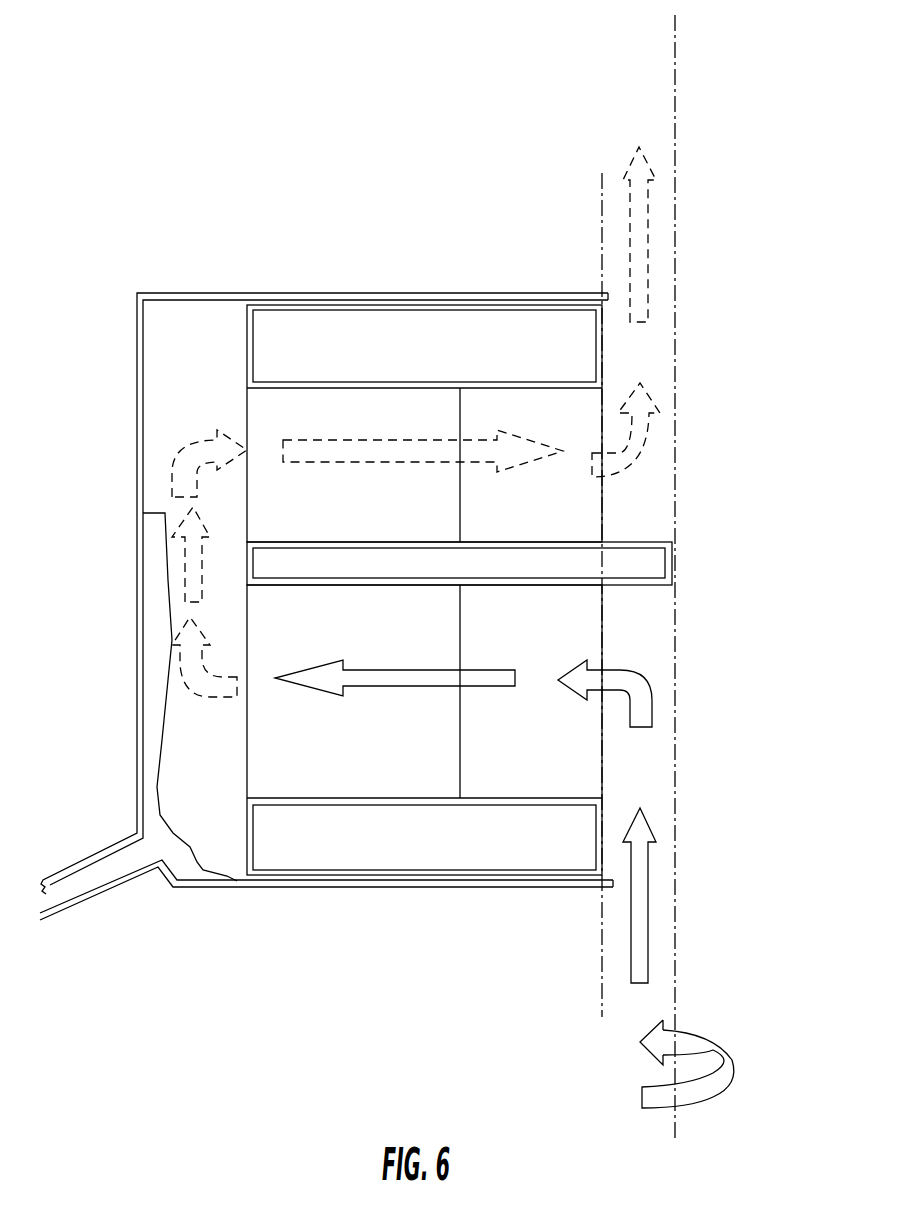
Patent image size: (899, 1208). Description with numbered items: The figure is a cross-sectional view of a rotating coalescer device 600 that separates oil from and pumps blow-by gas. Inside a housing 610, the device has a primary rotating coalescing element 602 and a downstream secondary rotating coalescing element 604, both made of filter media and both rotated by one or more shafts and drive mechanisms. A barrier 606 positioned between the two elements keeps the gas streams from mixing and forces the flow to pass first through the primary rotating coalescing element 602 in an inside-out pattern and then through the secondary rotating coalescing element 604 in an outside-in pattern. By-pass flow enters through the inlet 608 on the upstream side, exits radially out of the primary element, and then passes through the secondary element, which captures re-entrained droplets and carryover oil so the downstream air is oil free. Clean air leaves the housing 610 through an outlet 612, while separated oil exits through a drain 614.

The rotating coalescer device 600 is at (162, 56).
The primary rotating coalescing element 602 is at (262, 717).
The secondary rotating coalescing element 604 is at (325, 422).
The barrier 606 is at (630, 558).
The inlet 608 is at (626, 905).
The housing 610 is at (230, 293).
The outlet 612 is at (620, 228).
The drain 614 is at (108, 880).